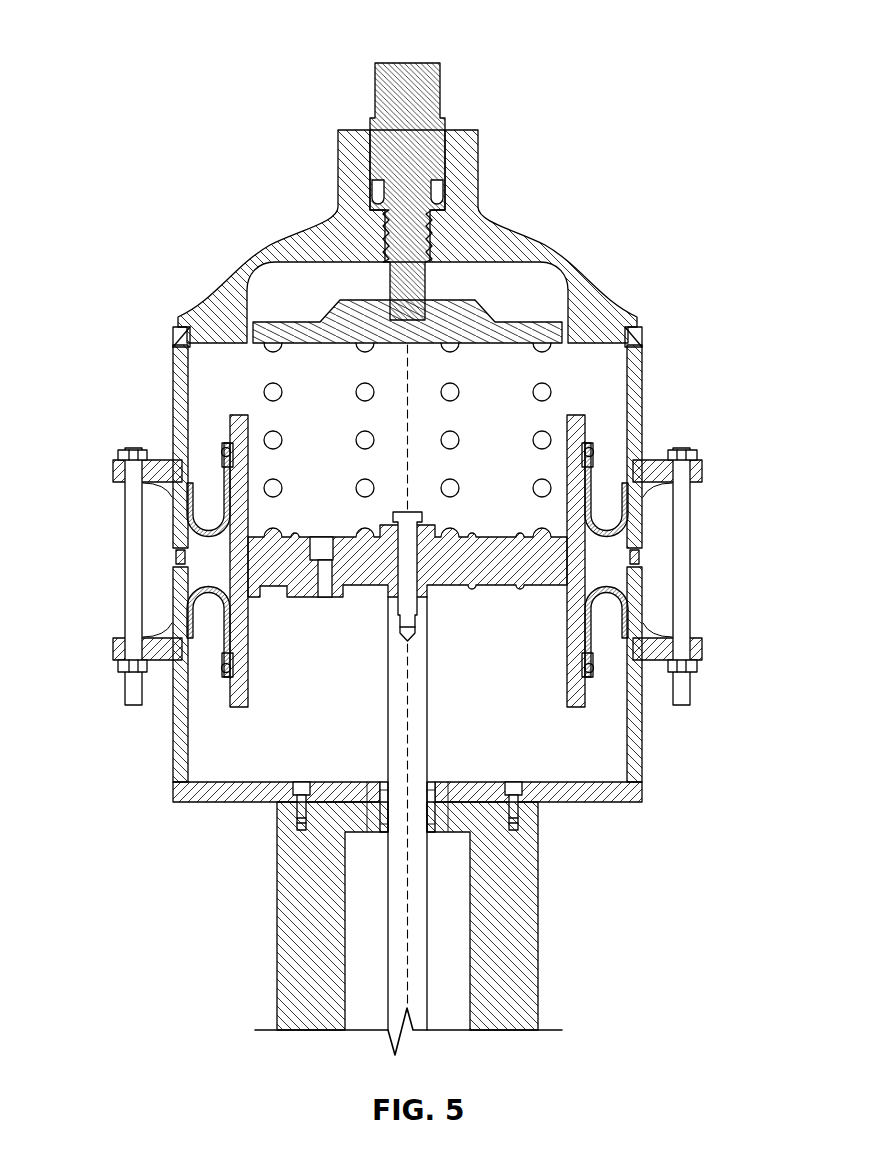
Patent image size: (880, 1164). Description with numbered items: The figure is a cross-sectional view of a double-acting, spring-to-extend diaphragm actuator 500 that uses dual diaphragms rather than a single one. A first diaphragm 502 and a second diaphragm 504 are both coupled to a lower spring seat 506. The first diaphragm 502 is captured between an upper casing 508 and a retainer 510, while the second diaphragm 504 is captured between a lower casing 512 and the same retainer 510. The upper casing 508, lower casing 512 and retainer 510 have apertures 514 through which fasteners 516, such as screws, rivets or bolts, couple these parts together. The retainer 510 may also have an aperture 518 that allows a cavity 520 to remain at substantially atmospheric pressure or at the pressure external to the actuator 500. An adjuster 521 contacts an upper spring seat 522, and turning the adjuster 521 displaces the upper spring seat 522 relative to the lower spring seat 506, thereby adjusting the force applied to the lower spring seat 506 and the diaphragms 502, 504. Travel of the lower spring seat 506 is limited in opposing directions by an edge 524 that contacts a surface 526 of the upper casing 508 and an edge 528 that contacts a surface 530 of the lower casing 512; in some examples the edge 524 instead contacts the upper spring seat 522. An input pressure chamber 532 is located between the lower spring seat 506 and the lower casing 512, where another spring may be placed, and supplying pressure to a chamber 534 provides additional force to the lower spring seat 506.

The diaphragm actuator 500 is at (128, 52).
The first diaphragm 502 is at (605, 537).
The second diaphragm 504 is at (608, 592).
The lower spring seat 506 is at (260, 560).
The upper casing 508 is at (353, 240).
The retainer 510 is at (178, 493).
The lower casing 512 is at (176, 745).
The apertures 514 is at (118, 460).
The fasteners 516 is at (132, 553).
The aperture 518 is at (178, 537).
The cavity 520 is at (218, 568).
The adjuster 521 is at (400, 108).
The upper spring seat 522 is at (298, 320).
The edge 524 is at (573, 415).
The surface 526 is at (200, 337).
The edge 528 is at (240, 697).
The surface 530 is at (228, 785).
The input pressure chamber 532 is at (529, 654).
The chamber 534 is at (341, 431).